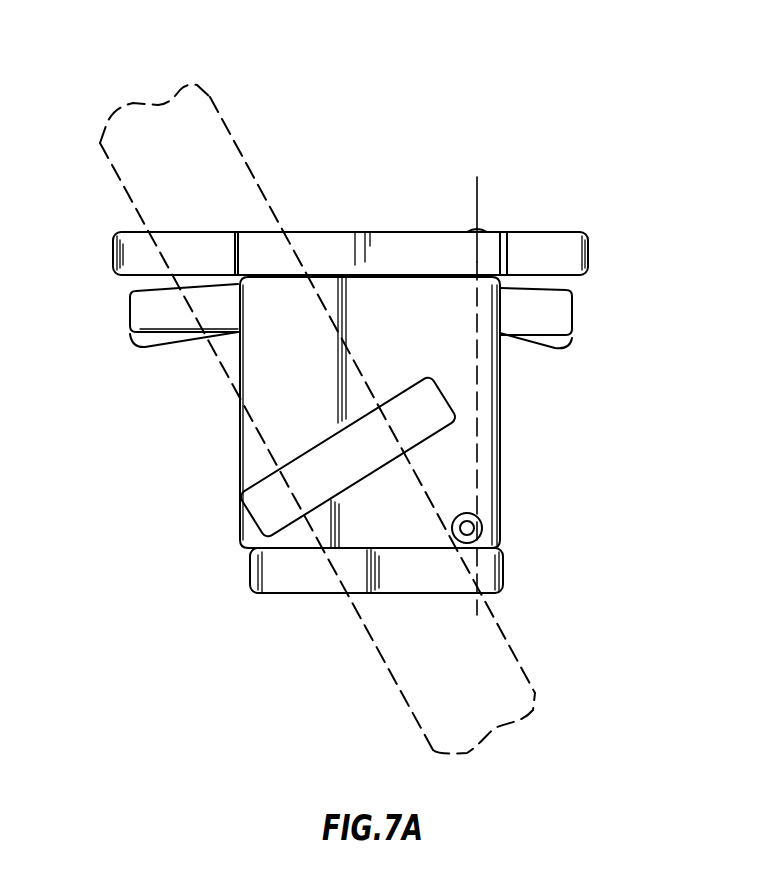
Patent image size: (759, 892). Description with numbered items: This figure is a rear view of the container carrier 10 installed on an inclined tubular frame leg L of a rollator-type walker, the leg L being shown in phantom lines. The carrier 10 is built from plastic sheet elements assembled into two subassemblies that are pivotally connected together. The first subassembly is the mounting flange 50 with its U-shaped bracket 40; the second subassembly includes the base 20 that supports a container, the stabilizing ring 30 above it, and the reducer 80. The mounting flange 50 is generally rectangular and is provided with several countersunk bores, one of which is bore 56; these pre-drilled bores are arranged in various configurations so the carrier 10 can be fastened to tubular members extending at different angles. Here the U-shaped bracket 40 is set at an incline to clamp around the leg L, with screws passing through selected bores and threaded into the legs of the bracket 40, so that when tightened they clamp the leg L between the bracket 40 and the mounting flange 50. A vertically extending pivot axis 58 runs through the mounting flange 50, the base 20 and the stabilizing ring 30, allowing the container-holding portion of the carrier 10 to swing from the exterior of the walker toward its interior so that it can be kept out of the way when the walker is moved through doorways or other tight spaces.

The container carrier 10 is at (349, 345).
The base 20 is at (503, 575).
The stabilizing ring 30 is at (560, 230).
The U-shaped bracket 40 is at (367, 466).
The mounting flange 50 is at (485, 370).
The countersunk bore 56 is at (472, 514).
The pivot axis 58 is at (478, 210).
The reducer 80 is at (143, 325).
The frame leg L is at (225, 148).